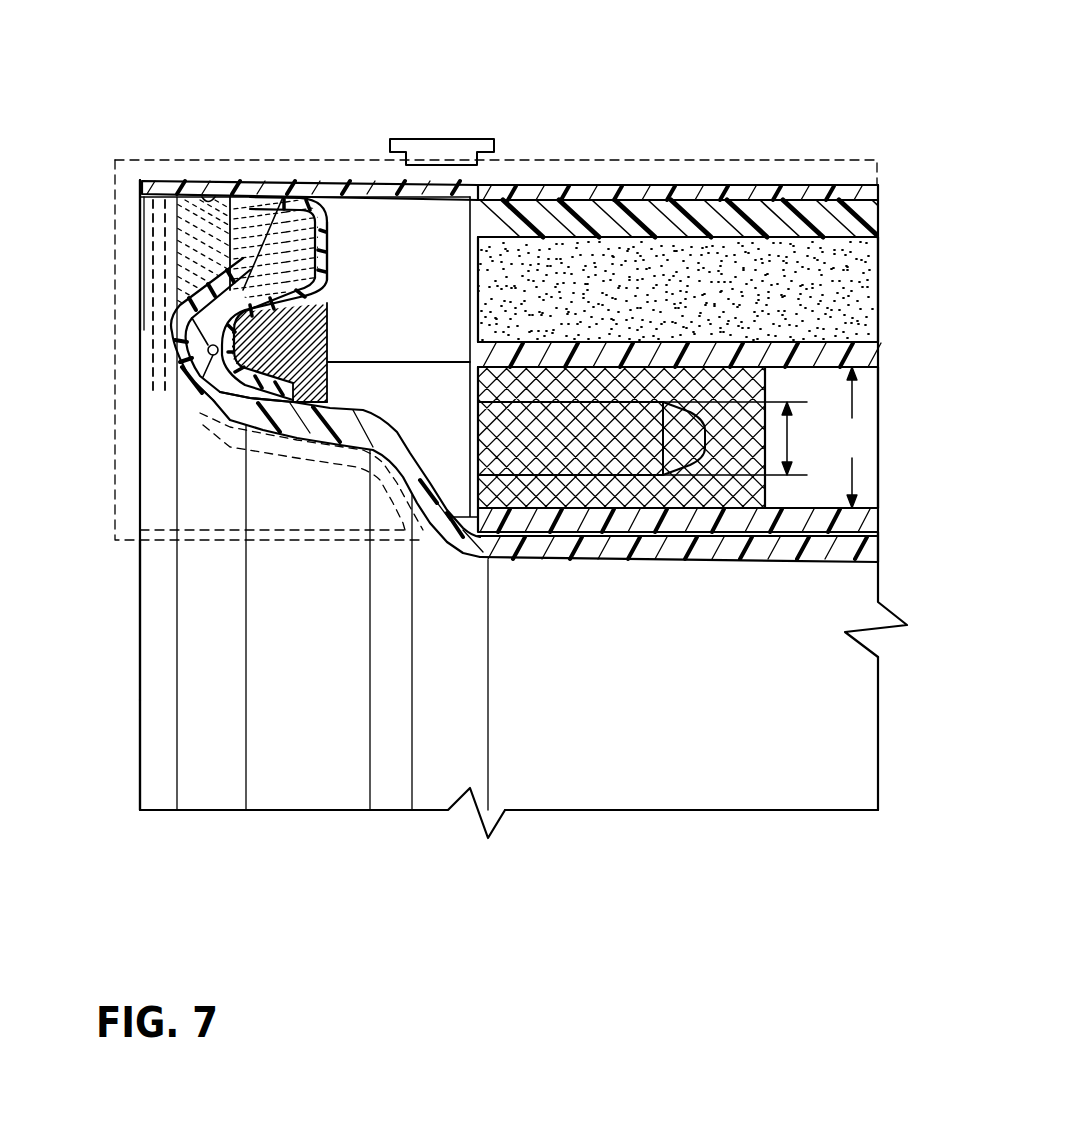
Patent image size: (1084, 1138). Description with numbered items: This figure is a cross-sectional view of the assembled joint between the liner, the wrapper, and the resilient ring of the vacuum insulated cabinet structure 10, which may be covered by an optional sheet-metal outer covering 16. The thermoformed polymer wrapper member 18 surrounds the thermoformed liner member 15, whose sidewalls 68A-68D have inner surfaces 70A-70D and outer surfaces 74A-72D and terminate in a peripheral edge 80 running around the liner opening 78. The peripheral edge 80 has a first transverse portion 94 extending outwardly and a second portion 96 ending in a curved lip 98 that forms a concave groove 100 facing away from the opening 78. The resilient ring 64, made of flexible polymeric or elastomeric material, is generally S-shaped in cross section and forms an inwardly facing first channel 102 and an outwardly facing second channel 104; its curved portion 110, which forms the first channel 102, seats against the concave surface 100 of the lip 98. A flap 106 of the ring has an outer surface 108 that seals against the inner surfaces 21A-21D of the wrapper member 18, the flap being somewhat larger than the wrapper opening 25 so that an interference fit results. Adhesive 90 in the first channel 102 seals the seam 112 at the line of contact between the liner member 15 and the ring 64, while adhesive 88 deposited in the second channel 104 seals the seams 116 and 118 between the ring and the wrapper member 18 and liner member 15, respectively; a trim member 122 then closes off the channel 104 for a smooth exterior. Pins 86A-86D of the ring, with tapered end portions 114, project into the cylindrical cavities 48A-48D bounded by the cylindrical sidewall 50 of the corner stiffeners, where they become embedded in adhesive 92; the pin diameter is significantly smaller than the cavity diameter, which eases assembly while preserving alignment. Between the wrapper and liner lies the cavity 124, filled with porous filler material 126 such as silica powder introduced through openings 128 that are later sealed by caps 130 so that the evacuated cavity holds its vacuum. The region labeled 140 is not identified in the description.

The vacuum insulated cabinet structure 10 is at (884, 220).
The liner member 15 is at (772, 565).
The outer covering 16 is at (825, 158).
The polymer wrapper member 18 is at (182, 187).
The inner surfaces 21A-21D is at (137, 207).
The opening 25 is at (139, 643).
The cylindrical cavities 48A-48D is at (863, 400).
The cylindrical sidewall 50 is at (843, 340).
The resilient ring 64 is at (313, 197).
The sidewalls 68A-68D is at (847, 563).
The inner surfaces 70A-70D is at (710, 562).
The outer surfaces 74A-72D is at (837, 540).
The opening 78 is at (143, 715).
The peripheral edge 80 is at (205, 420).
The pins 86A-86D is at (588, 397).
The adhesive 88 is at (195, 255).
The adhesive 90 is at (333, 357).
The adhesive 92 is at (727, 380).
The first transverse portion 94 is at (410, 493).
The second portion 96 is at (307, 440).
The curved end portion 98 is at (213, 343).
The concave groove 100 is at (205, 365).
The first channel 102 is at (190, 285).
The second channel 104 is at (200, 212).
The flap 106 is at (140, 218).
The outer surface 108 is at (250, 198).
The curved portion 110 is at (250, 408).
The seam 112 is at (330, 383).
The tapered end portion 114 is at (690, 415).
The seam 116 is at (200, 195).
The seam 118 is at (278, 205).
The trim member 122 is at (113, 217).
The cavity 124 is at (860, 268).
The porous filler material 126 is at (568, 270).
The openings 128 is at (463, 192).
The caps 130 is at (426, 138).
The wheel body 140 is at (590, 722).